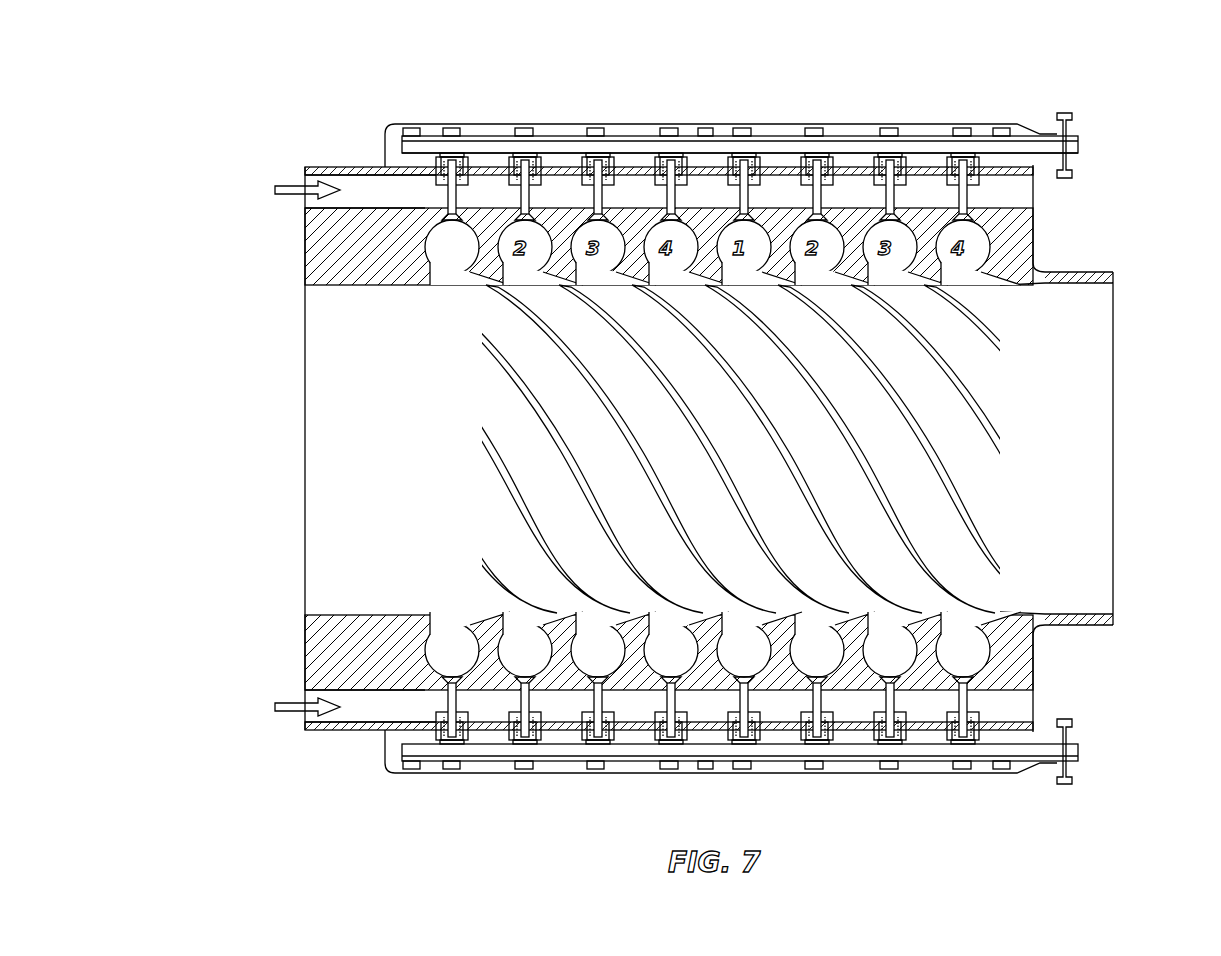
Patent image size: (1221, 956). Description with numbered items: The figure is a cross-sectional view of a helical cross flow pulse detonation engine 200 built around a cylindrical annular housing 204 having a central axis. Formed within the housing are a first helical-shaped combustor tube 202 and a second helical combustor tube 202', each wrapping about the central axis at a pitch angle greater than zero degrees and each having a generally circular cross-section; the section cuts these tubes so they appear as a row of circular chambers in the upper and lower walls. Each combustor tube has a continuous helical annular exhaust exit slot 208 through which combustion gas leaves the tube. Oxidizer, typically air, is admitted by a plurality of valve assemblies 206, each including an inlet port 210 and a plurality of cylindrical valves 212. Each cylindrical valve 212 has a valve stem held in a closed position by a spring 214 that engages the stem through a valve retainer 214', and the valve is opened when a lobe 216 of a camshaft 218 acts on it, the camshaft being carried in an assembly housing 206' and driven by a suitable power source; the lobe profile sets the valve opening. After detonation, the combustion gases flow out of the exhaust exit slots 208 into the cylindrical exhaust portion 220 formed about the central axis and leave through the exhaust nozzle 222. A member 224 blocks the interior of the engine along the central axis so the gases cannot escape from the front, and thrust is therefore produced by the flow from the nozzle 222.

The helical cross flow pulse detonation engine 200 is at (893, 43).
The helical-shaped combustor tube 202 is at (445, 285).
The second helical combustor tube 202' is at (772, 602).
The cylindrical annular housing 204 is at (356, 735).
The valve assembly 206 is at (740, 444).
The assembly housing 206' is at (721, 417).
The helical annular exhaust exit slot 208 is at (510, 296).
The inlet port 210 is at (445, 213).
The cylindrical valve 212 is at (358, 188).
The spring 214 is at (554, 149).
The valve retainer 214' is at (550, 93).
The lobe 216 is at (820, 128).
The camshaft 218 is at (918, 133).
The cylindrical exhaust portion 220 is at (687, 450).
The exhaust nozzle 222 is at (1095, 356).
The member 224 is at (305, 390).